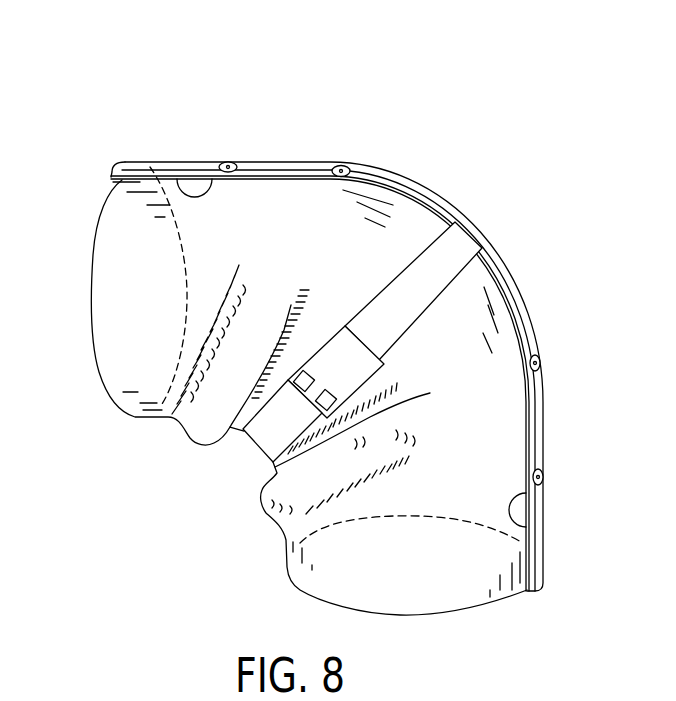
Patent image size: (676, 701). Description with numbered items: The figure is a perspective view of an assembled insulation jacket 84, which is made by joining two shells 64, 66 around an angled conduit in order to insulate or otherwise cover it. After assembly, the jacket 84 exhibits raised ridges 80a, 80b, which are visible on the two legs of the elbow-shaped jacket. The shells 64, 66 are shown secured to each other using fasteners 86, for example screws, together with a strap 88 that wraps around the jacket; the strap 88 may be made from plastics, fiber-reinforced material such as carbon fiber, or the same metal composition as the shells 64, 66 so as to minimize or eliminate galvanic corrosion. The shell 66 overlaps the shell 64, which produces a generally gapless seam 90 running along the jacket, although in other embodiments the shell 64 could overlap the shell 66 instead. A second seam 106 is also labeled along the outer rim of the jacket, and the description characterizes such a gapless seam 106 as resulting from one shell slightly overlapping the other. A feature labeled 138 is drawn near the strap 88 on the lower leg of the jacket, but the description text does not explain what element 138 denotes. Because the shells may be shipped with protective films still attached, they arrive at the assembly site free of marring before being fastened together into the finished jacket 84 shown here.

The insulation jacket 84 is at (516, 59).
The fasteners 86 is at (340, 165).
The gapless seam 90 is at (178, 192).
The gapless seam 106 is at (440, 215).
The strap 88 is at (462, 246).
The shell 64 is at (118, 352).
The shell 66 is at (187, 283).
The raised ridge 80b is at (243, 345).
The raised ridge 80a is at (383, 453).
The fold 138 is at (380, 427).